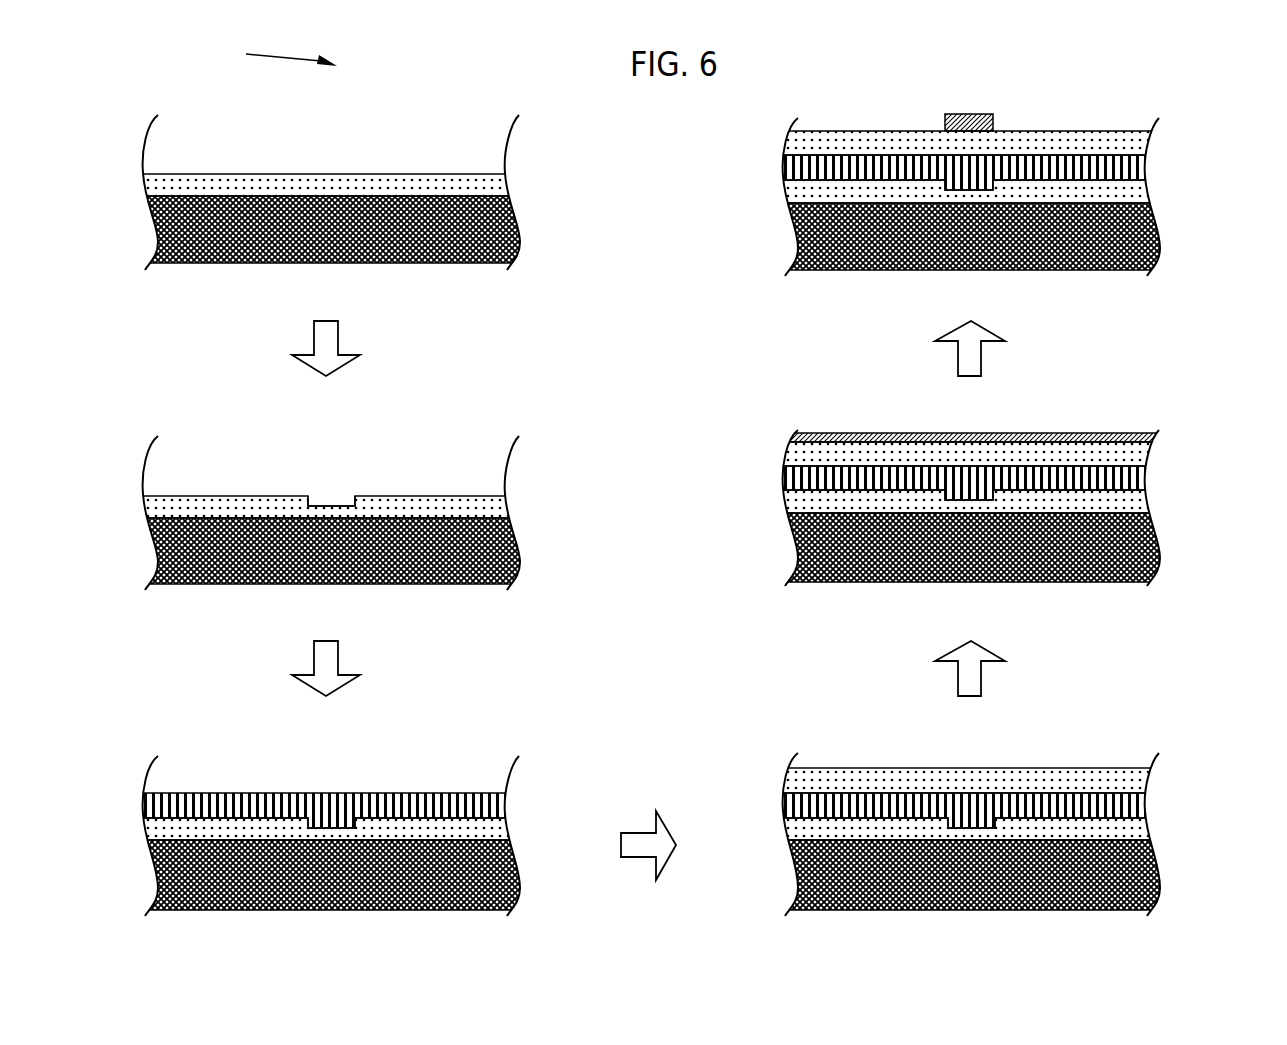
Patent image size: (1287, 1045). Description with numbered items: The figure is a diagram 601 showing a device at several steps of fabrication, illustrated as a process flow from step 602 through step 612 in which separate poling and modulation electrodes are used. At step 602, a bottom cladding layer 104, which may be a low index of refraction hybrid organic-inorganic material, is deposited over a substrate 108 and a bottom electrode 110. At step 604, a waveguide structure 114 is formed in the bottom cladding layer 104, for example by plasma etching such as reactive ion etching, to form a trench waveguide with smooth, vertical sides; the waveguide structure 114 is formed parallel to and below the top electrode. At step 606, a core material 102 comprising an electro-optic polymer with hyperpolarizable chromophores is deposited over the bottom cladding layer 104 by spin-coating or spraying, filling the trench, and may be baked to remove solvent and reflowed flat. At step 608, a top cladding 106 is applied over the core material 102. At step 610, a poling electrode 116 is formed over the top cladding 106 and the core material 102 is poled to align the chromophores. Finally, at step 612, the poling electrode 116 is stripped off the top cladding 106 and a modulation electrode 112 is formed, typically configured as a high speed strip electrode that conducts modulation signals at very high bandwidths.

The diagram 601 is at (267, 56).
The step 602 is at (515, 212).
The step 604 is at (517, 532).
The step 606 is at (517, 855).
The step 608 is at (1155, 855).
The step 610 is at (1155, 527).
The step 612 is at (1155, 220).
The core material 102 is at (400, 785).
The bottom cladding layer 104 is at (428, 166).
The top cladding 106 is at (1048, 760).
The substrate 108 is at (190, 182).
The bottom electrode 110 is at (315, 188).
The modulation electrode 112 is at (955, 106).
The waveguide structure 114 is at (345, 496).
The poling electrode 116 is at (850, 427).